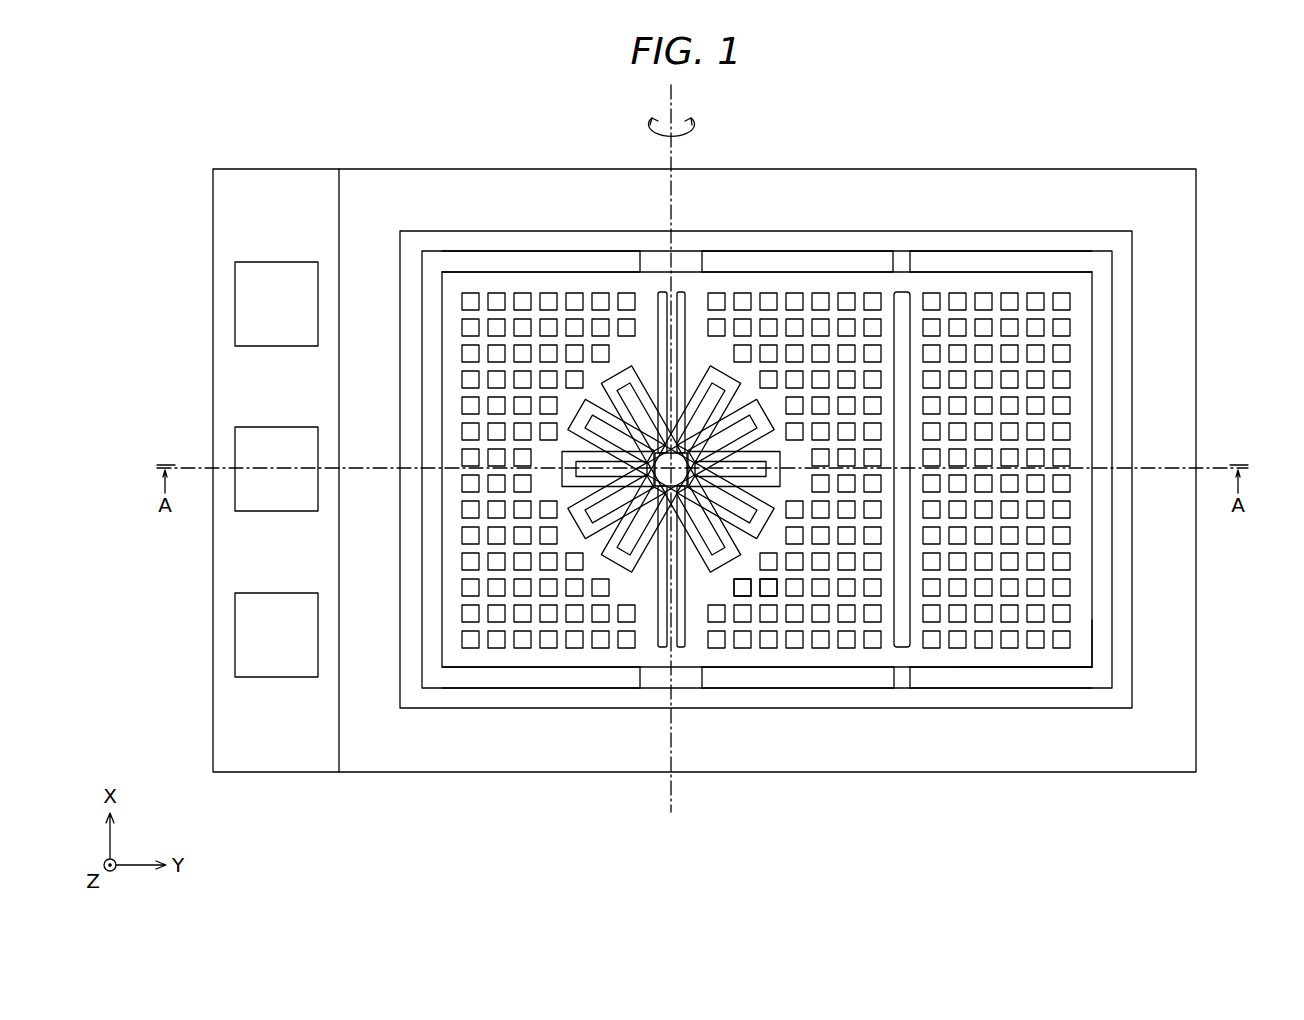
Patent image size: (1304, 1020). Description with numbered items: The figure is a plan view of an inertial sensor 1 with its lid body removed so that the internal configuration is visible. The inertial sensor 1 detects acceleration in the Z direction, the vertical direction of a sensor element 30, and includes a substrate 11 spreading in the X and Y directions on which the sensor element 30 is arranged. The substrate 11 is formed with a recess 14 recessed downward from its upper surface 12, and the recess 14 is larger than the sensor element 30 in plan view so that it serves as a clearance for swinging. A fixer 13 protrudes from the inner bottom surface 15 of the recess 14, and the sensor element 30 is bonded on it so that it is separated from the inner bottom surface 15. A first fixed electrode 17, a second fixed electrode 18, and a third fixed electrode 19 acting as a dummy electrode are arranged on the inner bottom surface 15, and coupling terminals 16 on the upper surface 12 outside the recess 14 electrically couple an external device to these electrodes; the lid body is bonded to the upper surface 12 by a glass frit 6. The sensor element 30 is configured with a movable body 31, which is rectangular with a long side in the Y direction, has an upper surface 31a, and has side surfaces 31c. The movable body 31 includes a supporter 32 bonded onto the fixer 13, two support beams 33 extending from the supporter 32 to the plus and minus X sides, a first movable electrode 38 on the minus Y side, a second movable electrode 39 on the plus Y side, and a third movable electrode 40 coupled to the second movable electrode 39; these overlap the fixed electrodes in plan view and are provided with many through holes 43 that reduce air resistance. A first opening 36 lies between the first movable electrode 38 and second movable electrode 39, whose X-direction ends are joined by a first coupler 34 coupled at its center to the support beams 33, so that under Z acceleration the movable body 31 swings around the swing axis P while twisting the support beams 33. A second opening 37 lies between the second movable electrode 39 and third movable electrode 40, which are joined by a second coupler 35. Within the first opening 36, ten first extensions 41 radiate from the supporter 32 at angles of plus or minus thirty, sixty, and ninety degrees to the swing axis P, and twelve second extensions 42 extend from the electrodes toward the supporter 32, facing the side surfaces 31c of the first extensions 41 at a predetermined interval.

The inertial sensor 1 is at (745, 466).
The glass frit 6 is at (774, 527).
The substrate 11 is at (1147, 774).
The upper surface 12 is at (287, 496).
The fixer 13 is at (738, 540).
The recess 14 is at (1104, 610).
The inner bottom surface 15 is at (1000, 700).
The coupling terminals 16 is at (278, 262).
The first fixed electrode 17 is at (520, 677).
The second fixed electrode 18 is at (829, 677).
The third fixed electrode 19 is at (960, 677).
The sensor element 30 is at (941, 265).
The movable body 31 is at (718, 272).
The upper surface 31a is at (1046, 657).
The side surfaces 31c is at (563, 453).
The supporter 32 is at (655, 555).
The support beams 33 is at (655, 292).
The first coupler 34 is at (680, 292).
The second coupler 35 is at (902, 292).
The first opening 36 is at (676, 652).
The second opening 37 is at (906, 660).
The first movable electrode 38 is at (531, 262).
The second movable electrode 39 is at (760, 262).
The third movable electrode 40 is at (985, 262).
The first extensions 41 is at (740, 597).
The second extensions 42 is at (767, 597).
The through holes 43 is at (470, 293).
The swing axis P is at (676, 92).